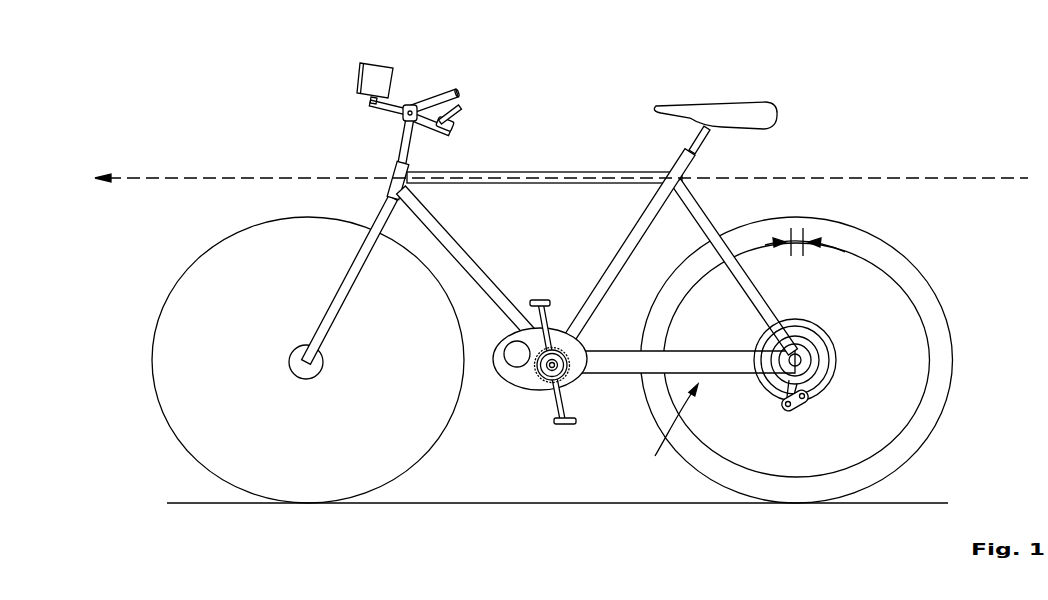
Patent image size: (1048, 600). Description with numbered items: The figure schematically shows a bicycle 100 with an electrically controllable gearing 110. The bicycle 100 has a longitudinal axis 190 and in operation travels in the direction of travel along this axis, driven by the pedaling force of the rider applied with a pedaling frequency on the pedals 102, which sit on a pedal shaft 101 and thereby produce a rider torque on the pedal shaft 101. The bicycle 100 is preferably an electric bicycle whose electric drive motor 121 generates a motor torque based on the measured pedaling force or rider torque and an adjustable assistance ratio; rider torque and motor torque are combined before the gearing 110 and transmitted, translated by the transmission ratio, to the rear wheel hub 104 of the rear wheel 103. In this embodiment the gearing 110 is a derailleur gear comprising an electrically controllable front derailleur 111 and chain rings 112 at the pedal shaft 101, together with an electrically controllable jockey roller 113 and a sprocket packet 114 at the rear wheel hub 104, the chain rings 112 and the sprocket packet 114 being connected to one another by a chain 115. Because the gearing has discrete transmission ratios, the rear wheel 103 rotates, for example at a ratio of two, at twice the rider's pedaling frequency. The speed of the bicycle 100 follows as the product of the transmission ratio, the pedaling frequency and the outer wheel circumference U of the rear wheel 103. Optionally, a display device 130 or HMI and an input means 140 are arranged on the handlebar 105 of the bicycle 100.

The bicycle 100 is at (523, 61).
The pedal shaft 101 is at (544, 374).
The pedals 102 is at (540, 299).
The rear wheel 103 is at (881, 240).
The rear wheel hub 104 is at (802, 360).
The handlebar 105 is at (440, 90).
The electrically controllable gearing 110 is at (666, 431).
The front derailleur 111 is at (550, 340).
The chain rings 112 is at (563, 373).
The jockey roller 113 is at (800, 410).
The sprocket packet 114 is at (838, 376).
The chain 115 is at (727, 375).
The electric drive motor 121 is at (505, 373).
The display device 130 is at (354, 76).
The input means 140 is at (460, 106).
The longitudinal axis 190 is at (143, 176).
The outer wheel circumference U is at (845, 250).